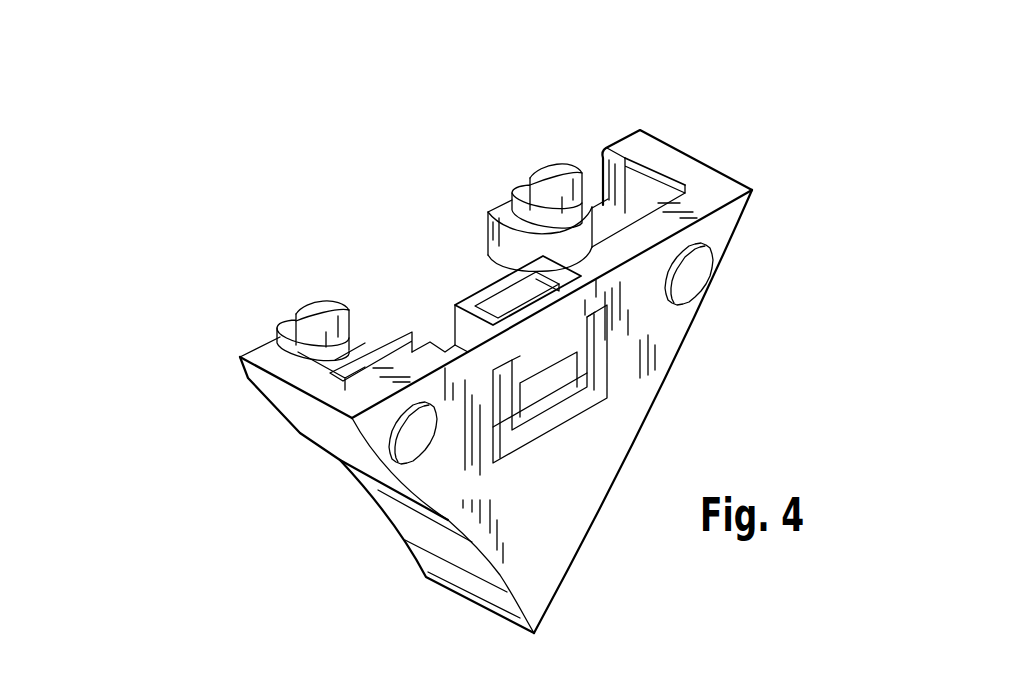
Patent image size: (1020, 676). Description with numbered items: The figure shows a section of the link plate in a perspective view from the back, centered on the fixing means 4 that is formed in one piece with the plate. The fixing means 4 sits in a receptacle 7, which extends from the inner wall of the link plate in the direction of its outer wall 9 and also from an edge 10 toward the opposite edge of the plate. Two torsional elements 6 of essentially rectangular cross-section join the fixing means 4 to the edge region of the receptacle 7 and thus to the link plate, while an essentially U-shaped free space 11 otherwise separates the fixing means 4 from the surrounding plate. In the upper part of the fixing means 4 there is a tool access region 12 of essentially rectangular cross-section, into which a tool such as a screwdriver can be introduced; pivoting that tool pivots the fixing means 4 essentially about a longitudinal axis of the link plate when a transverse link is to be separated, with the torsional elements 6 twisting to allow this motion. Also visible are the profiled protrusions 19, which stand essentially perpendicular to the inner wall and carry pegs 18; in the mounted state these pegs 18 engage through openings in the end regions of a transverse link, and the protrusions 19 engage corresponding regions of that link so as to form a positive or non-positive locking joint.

The fixing means 4 is at (448, 263).
The torsional elements 6 is at (495, 338).
The receptacle 7 is at (437, 187).
The outer wall 9 is at (578, 553).
The edge 10 is at (718, 188).
The U-shaped free space 11 is at (495, 456).
The tool access region 12 is at (512, 300).
The pegs 18 is at (562, 167).
The protrusions 19 is at (502, 204).